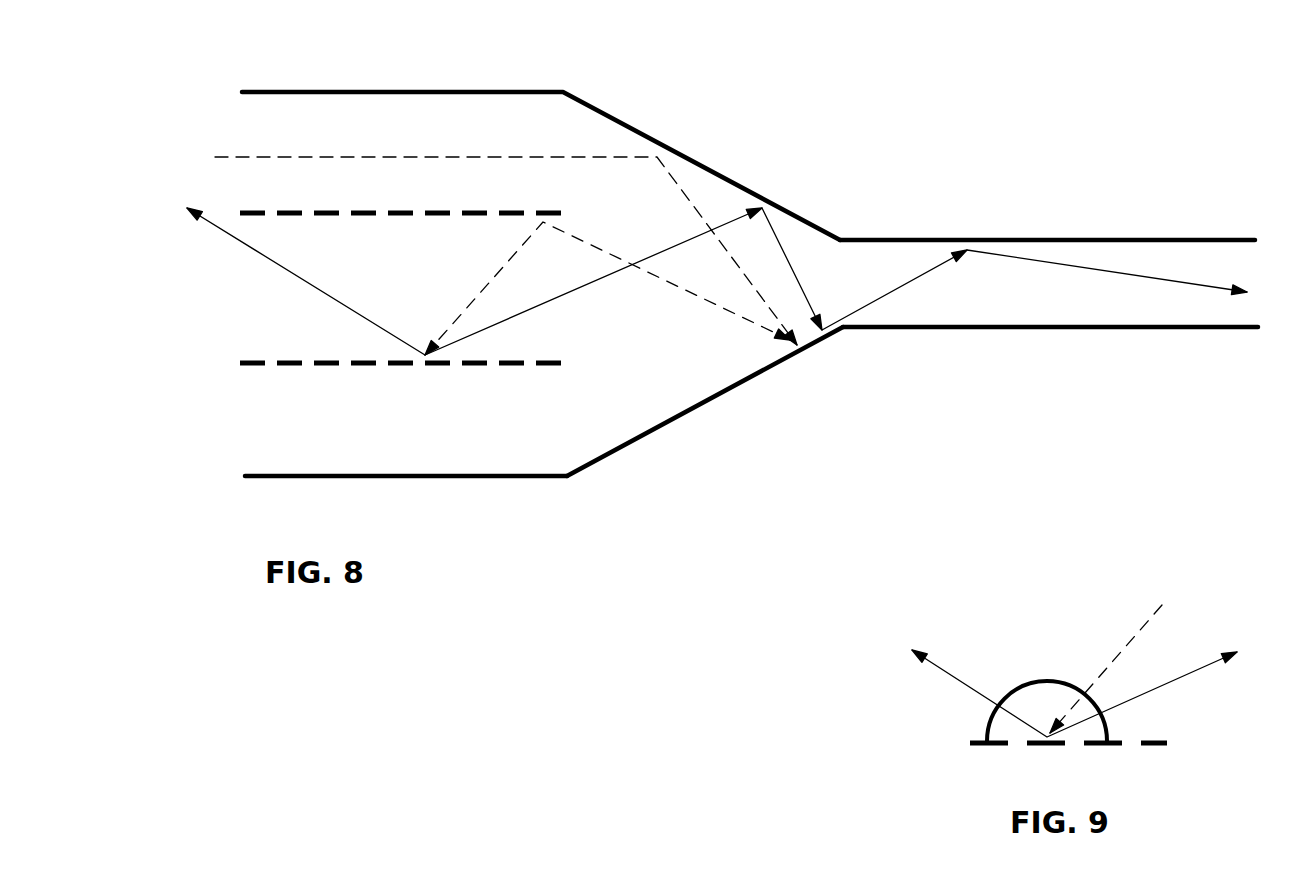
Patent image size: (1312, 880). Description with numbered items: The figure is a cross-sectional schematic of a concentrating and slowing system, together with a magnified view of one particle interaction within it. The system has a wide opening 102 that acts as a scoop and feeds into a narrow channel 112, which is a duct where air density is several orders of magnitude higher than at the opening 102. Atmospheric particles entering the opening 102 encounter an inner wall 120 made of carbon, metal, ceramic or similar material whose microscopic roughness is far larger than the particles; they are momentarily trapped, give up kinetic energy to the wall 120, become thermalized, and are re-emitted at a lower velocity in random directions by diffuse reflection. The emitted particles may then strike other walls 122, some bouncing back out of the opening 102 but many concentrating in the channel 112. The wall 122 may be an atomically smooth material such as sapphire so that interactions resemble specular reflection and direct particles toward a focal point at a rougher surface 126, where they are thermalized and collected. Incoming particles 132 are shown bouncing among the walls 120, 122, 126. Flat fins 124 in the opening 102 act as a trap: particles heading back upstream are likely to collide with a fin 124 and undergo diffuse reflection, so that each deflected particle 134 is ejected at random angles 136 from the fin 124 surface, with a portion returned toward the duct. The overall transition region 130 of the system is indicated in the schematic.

In FIG. 8, the opening 102 is at (240, 90).
In FIG. 8, the channel 112 is at (1068, 240).
In FIG. 8, the inner wall 120 is at (278, 475).
In FIG. 8, the wall 122 is at (722, 390).
In FIG. 8, the surface 126 is at (1062, 325).
In FIG. 8, the light guide transition region 130 is at (767, 118).
In FIG. 8, the incoming particles 132 is at (240, 157).
In FIG. 9, the incoming particles 132 is at (1147, 623).
In FIG. 8, the deflected particle 134 is at (210, 228).
In FIG. 9, the deflected particle 134 is at (935, 668).
In FIG. 8, the flat fin 124 is at (260, 360).
In FIG. 9, the flat fin 124 is at (965, 737).
In FIG. 9, the random angles 136 is at (1038, 675).